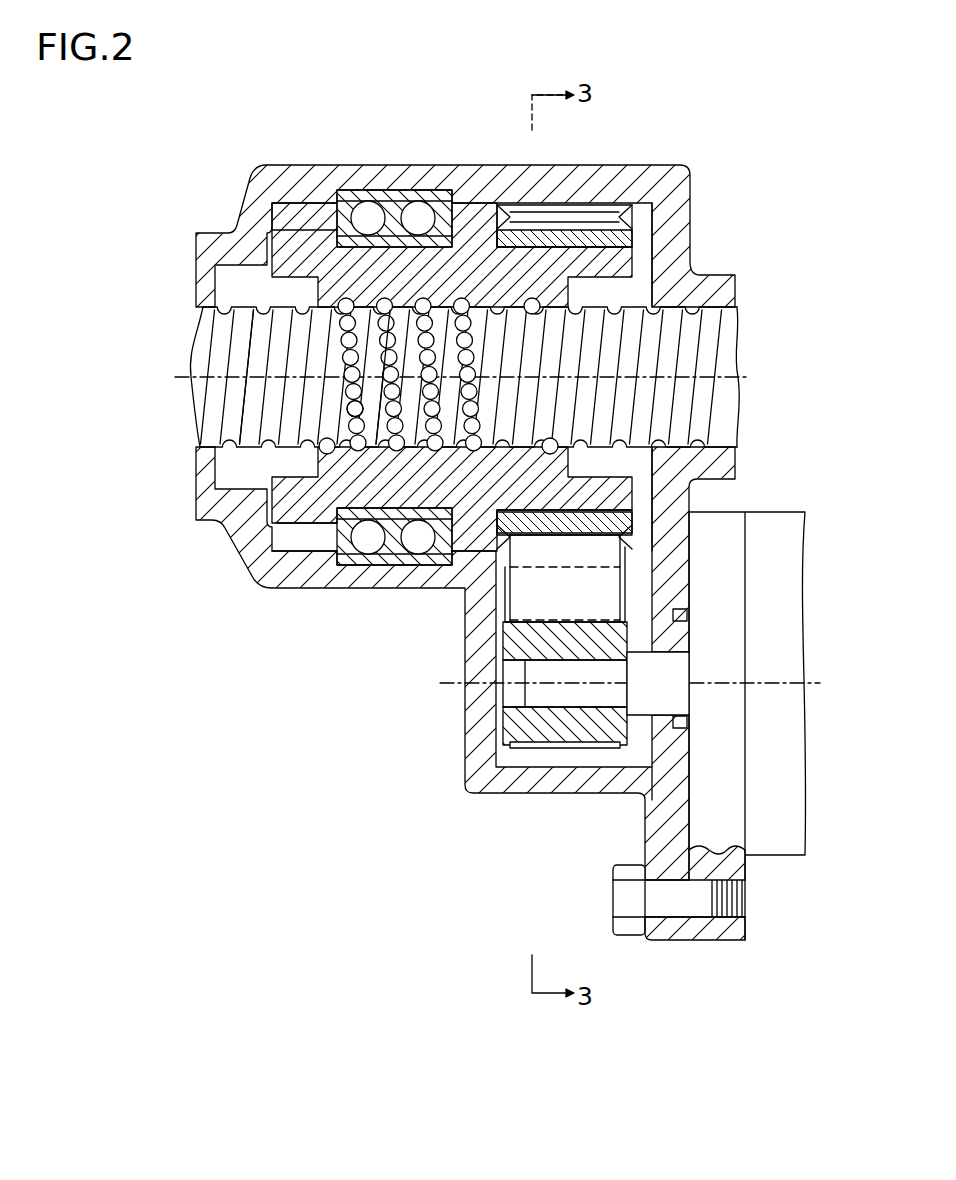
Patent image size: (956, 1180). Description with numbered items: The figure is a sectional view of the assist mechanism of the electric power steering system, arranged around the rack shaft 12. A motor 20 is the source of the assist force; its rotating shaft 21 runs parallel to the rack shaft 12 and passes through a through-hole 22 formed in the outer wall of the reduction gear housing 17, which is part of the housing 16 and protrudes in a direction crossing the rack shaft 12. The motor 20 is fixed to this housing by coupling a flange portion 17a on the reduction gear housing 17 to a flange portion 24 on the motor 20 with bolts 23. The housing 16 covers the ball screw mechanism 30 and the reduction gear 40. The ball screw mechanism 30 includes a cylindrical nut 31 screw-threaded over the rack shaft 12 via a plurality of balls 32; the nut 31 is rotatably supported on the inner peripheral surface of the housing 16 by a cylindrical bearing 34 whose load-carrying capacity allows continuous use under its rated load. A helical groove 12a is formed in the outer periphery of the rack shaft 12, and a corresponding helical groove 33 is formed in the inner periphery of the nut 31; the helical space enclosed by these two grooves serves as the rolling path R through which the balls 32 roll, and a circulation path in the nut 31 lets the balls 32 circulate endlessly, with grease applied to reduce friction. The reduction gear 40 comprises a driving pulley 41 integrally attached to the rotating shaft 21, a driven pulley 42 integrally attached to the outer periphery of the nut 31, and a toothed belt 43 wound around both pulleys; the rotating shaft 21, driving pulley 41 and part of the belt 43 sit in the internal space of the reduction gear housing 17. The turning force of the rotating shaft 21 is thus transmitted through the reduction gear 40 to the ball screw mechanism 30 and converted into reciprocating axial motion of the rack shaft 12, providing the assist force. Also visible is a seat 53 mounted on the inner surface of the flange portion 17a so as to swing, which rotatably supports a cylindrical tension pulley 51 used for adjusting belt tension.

The rack shaft 12 is at (204, 307).
The helical groove 12a is at (226, 354).
The housing 16 is at (578, 165).
The reduction gear housing 17 is at (467, 802).
The flange portion 17a is at (647, 835).
The motor 20 is at (801, 866).
The rotating shaft 21 is at (687, 720).
The through-hole 22 is at (687, 617).
The bolts 23 is at (613, 897).
The flange portion 24 is at (704, 932).
The ball screw mechanism 30 is at (280, 540).
The nut 31 is at (308, 532).
The balls 32 is at (412, 408).
The helical groove 33 is at (399, 440).
The bearing 34 is at (388, 565).
The reduction gear 40 is at (505, 587).
The driving pulley 41 is at (507, 733).
The driven pulley 42 is at (478, 203).
The belt 43 is at (495, 587).
The tension pulley 51 is at (592, 558).
The seat 53 is at (653, 620).
The rolling path R is at (404, 402).